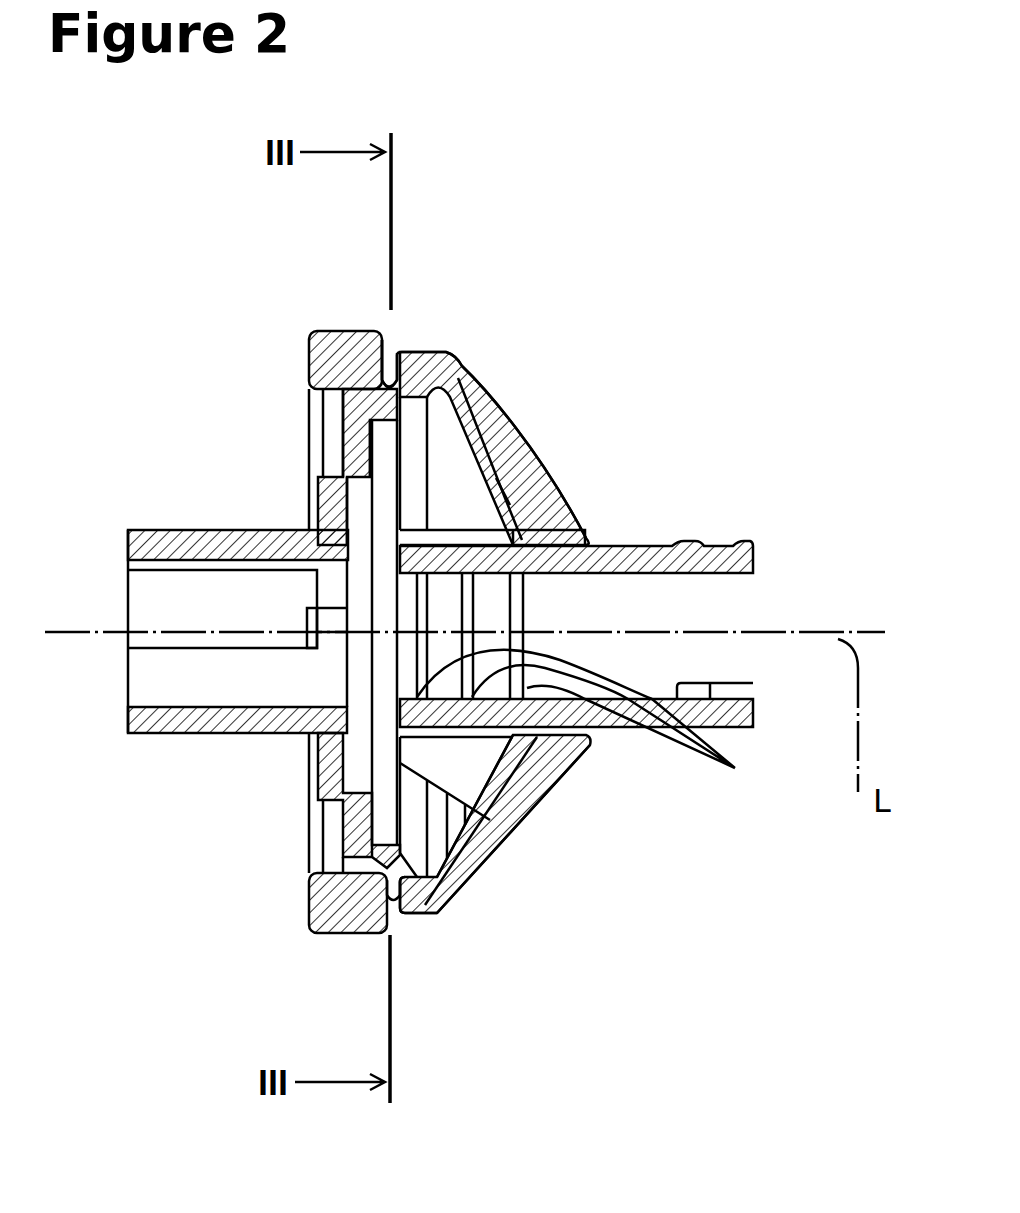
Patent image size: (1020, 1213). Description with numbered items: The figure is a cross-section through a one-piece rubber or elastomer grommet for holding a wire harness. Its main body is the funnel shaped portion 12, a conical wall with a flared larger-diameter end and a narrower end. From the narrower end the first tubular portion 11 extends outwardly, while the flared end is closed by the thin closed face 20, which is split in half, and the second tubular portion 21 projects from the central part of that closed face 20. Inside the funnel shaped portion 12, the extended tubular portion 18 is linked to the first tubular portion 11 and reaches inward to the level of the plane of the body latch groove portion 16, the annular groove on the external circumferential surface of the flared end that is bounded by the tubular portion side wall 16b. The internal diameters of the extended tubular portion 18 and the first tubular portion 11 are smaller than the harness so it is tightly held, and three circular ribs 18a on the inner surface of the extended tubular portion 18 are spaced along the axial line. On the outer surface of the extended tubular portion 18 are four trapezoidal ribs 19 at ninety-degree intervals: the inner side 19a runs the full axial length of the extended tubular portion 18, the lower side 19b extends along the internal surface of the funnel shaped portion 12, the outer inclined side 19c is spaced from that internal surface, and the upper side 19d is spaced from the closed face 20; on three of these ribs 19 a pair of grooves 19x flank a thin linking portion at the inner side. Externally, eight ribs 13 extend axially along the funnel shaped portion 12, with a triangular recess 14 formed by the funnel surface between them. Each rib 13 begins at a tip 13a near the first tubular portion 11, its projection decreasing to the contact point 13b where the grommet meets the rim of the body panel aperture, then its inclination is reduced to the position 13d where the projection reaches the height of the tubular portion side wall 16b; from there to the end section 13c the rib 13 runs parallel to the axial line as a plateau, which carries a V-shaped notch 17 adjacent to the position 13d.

The first tubular portion 11 is at (663, 547).
The funnel shaped portion 12 is at (493, 383).
The ribs 13 is at (537, 805).
The tip of rib 13a is at (592, 747).
The contact point 13b is at (467, 737).
The end section of rib 13c is at (410, 916).
The position 13d is at (445, 916).
The triangular recess 14 is at (525, 527).
The body latch groove portion 16 is at (393, 375).
The tubular portion side wall 16b is at (405, 348).
The notch 17 is at (462, 356).
The extended tubular portion 18 is at (538, 806).
The circular ribs 18a is at (735, 768).
The ribs 19 is at (508, 424).
The inner side 19a is at (428, 530).
The lower side 19b is at (505, 495).
The outer inclined side 19c is at (392, 378).
The upper side 19d is at (430, 528).
The grooves 19x is at (505, 495).
The closed face 20 is at (322, 465).
The second tubular portion 21 is at (178, 738).